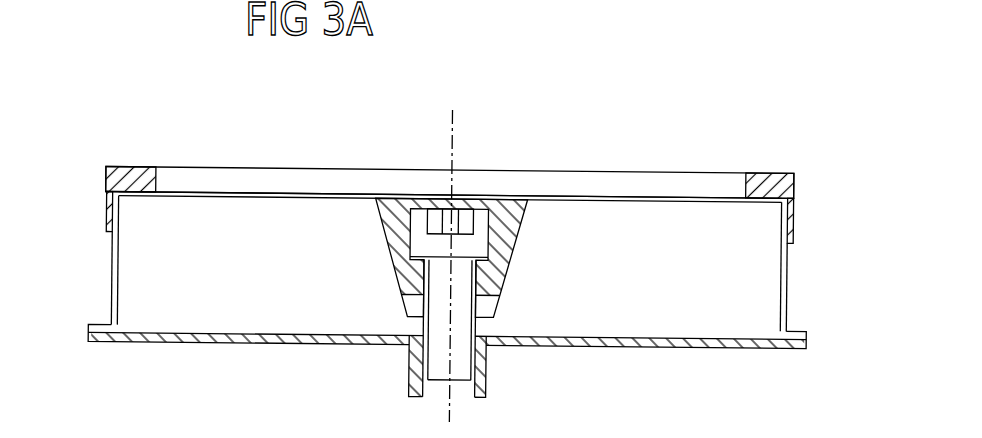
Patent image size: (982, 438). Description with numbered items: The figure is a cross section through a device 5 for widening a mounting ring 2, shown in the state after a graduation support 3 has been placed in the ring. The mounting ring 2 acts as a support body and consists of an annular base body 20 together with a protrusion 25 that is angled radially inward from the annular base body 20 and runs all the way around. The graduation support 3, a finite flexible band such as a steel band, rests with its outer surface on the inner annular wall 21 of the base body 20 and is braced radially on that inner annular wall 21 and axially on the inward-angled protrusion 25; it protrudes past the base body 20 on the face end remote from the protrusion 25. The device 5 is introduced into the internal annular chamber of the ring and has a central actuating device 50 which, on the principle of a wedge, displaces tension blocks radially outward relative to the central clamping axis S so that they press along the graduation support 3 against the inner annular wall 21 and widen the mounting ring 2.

The mounting ring 2 is at (136, 156).
The protrusion 25 is at (118, 170).
The annular base body 20 is at (108, 220).
The inner annular wall 21 is at (128, 216).
The graduation support 3 is at (111, 289).
The device for widening the mounting ring 5 is at (460, 106).
The central clamping axis S is at (448, 328).
The central actuating device 50 is at (460, 363).